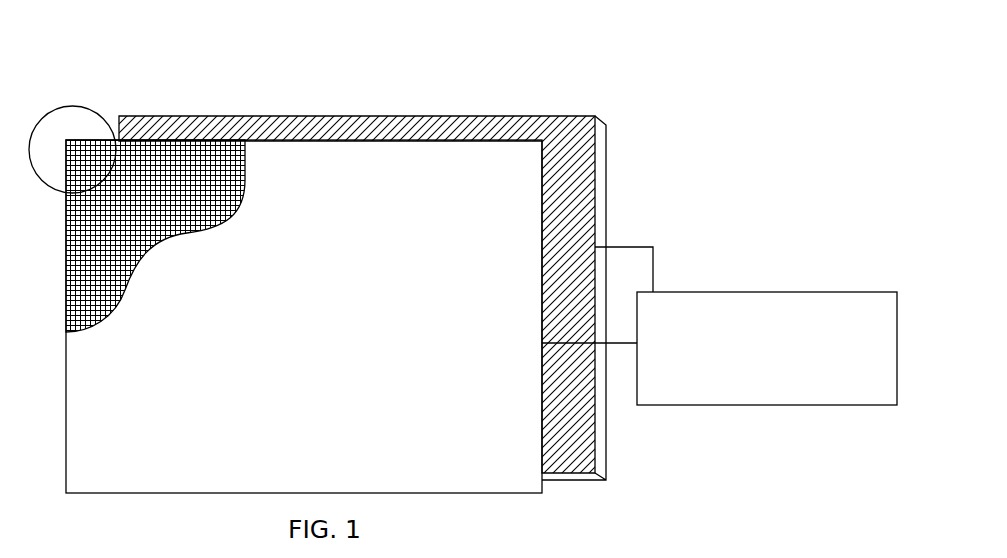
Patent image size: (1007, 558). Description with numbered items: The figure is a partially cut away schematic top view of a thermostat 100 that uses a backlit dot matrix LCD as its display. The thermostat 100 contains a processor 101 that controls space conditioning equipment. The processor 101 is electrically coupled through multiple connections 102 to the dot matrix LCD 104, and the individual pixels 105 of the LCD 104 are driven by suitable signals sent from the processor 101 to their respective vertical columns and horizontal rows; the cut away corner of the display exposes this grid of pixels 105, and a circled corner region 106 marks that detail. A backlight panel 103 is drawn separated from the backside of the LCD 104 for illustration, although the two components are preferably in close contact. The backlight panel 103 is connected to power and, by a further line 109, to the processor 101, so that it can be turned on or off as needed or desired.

The thermostat 100 is at (760, 205).
The processor 101 is at (767, 348).
The connections 102 is at (617, 360).
The backlight panel 103 is at (599, 196).
The dot matrix LCD 104 is at (408, 169).
The pixels 105 is at (179, 153).
The corner portion 106 is at (77, 113).
The connection line 109 is at (637, 258).